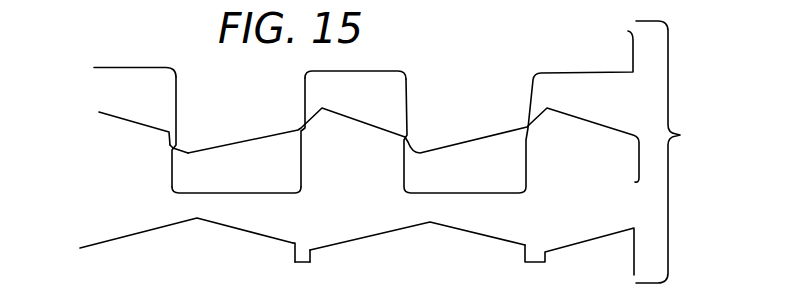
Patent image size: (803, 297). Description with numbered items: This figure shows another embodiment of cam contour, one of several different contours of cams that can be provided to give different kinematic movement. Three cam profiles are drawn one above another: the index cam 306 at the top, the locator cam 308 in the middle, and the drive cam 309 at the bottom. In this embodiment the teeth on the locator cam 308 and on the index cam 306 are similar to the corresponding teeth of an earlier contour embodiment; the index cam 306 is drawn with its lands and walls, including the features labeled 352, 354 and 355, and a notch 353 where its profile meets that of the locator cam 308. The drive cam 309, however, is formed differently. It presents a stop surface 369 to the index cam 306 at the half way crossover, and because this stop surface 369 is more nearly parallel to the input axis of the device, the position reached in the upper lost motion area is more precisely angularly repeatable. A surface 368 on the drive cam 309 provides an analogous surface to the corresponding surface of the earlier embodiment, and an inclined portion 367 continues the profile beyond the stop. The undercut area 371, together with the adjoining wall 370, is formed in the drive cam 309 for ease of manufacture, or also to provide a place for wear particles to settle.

The index cam 306 is at (417, 112).
The locator cam 308 is at (419, 145).
The drive cam 309 is at (410, 238).
The side wall of plate 352 is at (177, 100).
The notch 353 is at (183, 148).
The top land of plate 354 is at (306, 87).
The opposite side wall 355 is at (303, 117).
The inclined portion of lower strip 367 is at (362, 233).
The surface 368 is at (223, 223).
The stop surface 369 is at (301, 245).
The slot side wall 370 is at (293, 258).
The undercut area 371 is at (313, 257).